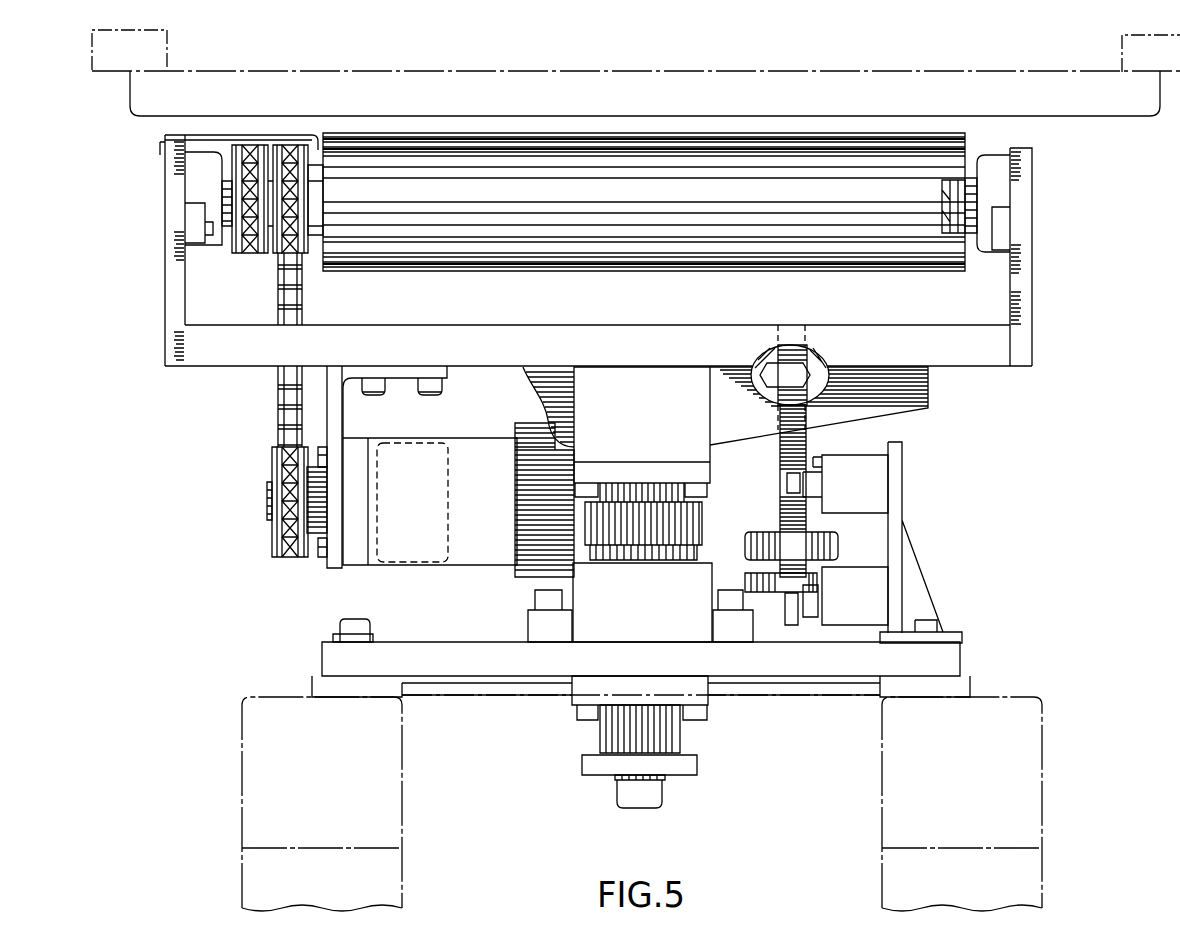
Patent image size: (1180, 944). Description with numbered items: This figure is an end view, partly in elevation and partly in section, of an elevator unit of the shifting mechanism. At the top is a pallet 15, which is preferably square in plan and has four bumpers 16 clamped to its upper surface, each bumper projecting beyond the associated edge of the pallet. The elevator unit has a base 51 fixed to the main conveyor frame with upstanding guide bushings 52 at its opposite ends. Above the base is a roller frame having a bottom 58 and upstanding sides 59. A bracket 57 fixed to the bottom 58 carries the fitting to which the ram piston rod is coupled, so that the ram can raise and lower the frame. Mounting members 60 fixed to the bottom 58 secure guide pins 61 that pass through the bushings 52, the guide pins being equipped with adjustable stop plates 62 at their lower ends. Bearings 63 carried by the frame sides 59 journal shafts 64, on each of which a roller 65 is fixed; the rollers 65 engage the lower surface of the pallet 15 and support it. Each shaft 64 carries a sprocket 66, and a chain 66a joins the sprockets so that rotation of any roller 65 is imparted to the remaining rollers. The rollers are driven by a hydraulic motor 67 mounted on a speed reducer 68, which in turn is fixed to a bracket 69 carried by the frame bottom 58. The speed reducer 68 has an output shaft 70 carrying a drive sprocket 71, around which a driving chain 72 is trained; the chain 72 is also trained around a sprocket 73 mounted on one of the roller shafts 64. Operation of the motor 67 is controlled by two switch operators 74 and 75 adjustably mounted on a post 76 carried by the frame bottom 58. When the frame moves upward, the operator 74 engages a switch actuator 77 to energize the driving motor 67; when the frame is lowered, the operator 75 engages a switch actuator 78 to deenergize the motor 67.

The pallet 15 is at (727, 78).
The bumper 16 is at (162, 68).
The base 51 is at (467, 651).
The guide bushing 52 is at (655, 612).
The bracket 57 is at (902, 407).
The frame bottom 58 is at (650, 342).
The frame side 59 is at (168, 256).
The mounting member 60 is at (703, 453).
The guide pin 61 is at (680, 508).
The adjustable stop plate 62 is at (690, 766).
The bearing 63 is at (193, 189).
The shaft 64 is at (962, 250).
The roller 65 is at (564, 255).
The sprocket 66 is at (233, 240).
The chain 66a is at (262, 254).
The hydraulic motor 67 is at (522, 573).
The speed reducer 68 is at (463, 553).
The bracket 69 is at (338, 415).
The output shaft 70 is at (268, 497).
The drive sprocket 71 is at (272, 467).
The driving chain 72 is at (278, 425).
The sprocket 73 is at (297, 248).
The switch operator 74 is at (835, 550).
The switch operator 75 is at (782, 588).
The post 76 is at (806, 447).
The switch actuator 77 is at (812, 487).
The switch actuator 78 is at (800, 609).